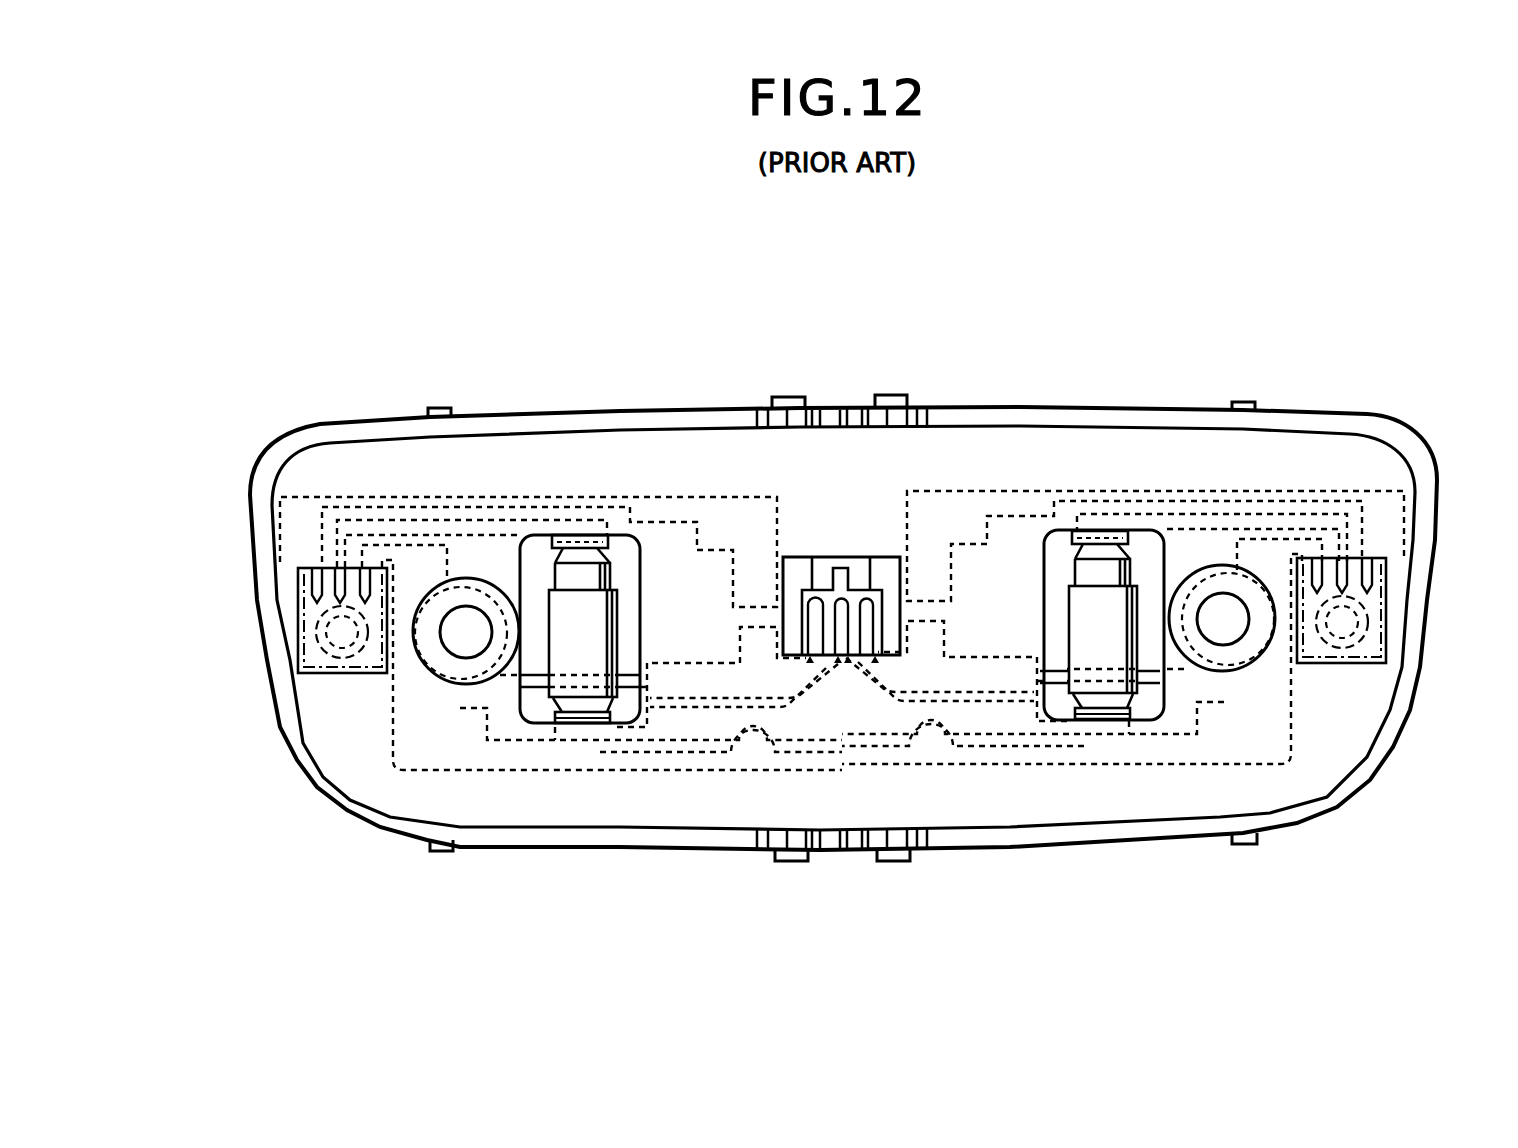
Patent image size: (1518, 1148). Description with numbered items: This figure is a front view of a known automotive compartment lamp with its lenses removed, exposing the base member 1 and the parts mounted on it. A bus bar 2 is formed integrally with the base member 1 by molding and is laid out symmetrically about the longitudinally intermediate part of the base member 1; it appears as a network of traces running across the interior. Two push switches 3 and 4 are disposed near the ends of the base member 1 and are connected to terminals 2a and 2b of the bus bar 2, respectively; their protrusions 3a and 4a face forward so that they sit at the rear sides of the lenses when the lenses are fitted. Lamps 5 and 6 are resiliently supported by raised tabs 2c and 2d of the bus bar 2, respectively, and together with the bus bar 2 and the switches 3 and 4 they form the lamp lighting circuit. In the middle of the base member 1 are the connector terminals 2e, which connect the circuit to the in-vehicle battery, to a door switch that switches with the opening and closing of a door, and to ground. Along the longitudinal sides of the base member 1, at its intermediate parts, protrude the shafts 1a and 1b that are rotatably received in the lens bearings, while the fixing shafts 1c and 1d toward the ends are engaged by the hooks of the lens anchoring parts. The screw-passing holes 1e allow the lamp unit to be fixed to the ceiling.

The base member 1 is at (578, 410).
The shaft 1a is at (898, 395).
The shaft 1b is at (786, 397).
The fixing shaft 1c is at (1243, 402).
The fixing shaft 1d is at (437, 408).
The screw-passing hole 1e is at (462, 640).
The bus bar 2 is at (997, 492).
The terminal 2a is at (1368, 577).
The terminal 2b is at (318, 584).
The raised tab 2c is at (1103, 530).
The raised tab 2d is at (590, 724).
The connector terminal 2e is at (843, 618).
The push switch 3 is at (1365, 655).
The protrusion 3a is at (1350, 622).
The push switch 4 is at (300, 680).
The protrusion 4a is at (343, 633).
The lamp 5 is at (1092, 625).
The lamp 6 is at (598, 628).